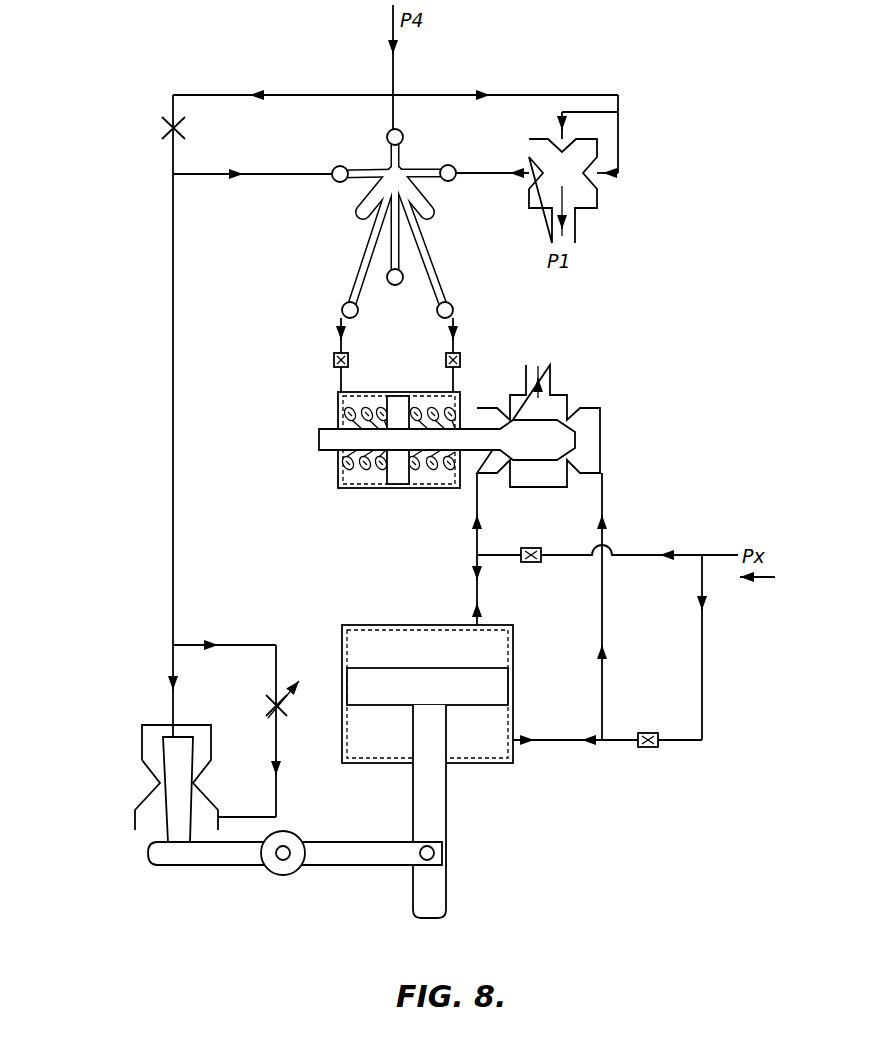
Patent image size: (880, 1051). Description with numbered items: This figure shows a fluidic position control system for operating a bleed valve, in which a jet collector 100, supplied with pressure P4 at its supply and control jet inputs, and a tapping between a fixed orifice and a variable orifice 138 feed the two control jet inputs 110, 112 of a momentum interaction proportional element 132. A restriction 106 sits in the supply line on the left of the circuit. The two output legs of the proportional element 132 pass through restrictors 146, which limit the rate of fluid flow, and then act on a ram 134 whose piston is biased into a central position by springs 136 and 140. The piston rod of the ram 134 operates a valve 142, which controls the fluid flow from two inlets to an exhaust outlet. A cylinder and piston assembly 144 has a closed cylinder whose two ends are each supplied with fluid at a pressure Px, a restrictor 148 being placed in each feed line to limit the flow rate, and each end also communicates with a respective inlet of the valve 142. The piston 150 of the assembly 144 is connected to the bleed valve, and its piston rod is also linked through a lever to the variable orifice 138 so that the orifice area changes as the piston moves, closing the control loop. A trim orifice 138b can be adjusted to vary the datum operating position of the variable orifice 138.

The jet collector 100 is at (603, 189).
The restriction 106 is at (168, 128).
The control jet input 110 is at (336, 169).
The control jet input 112 is at (453, 167).
The momentum interaction proportional element 132 is at (442, 226).
The ram 134 is at (361, 461).
The spring 136 is at (360, 470).
The variable orifice 138 is at (143, 743).
The trim orifice 138b is at (287, 706).
The spring 140 is at (423, 468).
The valve 142 is at (581, 393).
The cylinder and piston assembly 144 is at (459, 771).
The restrictor 146 is at (333, 354).
The restrictor 148 is at (531, 548).
The piston 150 is at (497, 690).